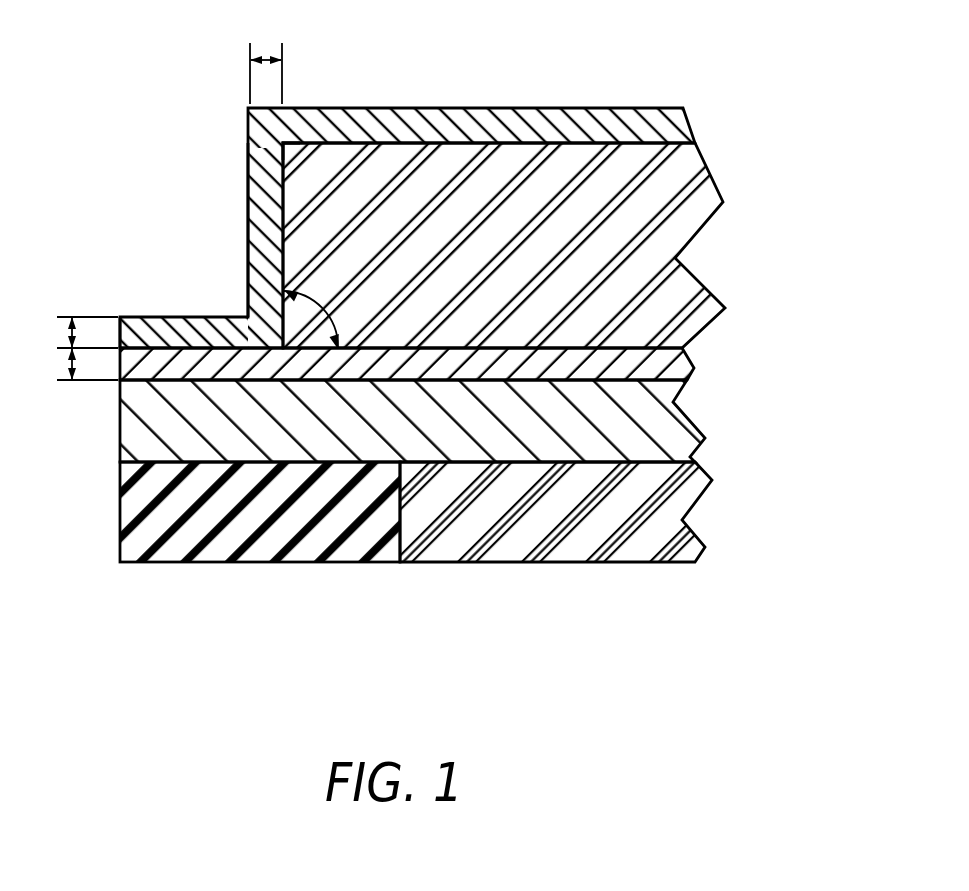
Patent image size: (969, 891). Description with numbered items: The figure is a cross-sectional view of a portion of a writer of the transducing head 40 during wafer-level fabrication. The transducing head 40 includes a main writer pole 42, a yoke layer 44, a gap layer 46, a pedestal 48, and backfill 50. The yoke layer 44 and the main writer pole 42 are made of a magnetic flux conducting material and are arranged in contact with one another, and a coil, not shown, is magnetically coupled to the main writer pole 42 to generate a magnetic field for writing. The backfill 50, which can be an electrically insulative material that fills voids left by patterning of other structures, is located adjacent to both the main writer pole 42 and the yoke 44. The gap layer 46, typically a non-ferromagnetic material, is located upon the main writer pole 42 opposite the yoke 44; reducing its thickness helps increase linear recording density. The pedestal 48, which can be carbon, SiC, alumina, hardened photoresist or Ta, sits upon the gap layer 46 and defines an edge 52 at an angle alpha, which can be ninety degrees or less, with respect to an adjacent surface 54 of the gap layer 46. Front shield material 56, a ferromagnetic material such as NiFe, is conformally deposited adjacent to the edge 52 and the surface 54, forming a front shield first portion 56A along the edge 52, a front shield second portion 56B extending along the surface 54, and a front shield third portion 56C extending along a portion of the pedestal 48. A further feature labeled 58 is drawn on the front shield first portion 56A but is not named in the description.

The transducing head 40 is at (403, 316).
The main writer pole 42 is at (660, 423).
The yoke layer 44 is at (673, 518).
The gap layer 46 is at (677, 367).
The pedestal 48 is at (670, 231).
The backfill 50 is at (268, 557).
The edge 52 is at (275, 152).
The surface 54 is at (150, 345).
The front shield material 56 is at (369, 184).
The front shield first portion 56A is at (258, 166).
The front shield second portion 56B is at (182, 320).
The front shield third portion 56C is at (433, 127).
The inner side surface 58 is at (247, 253).